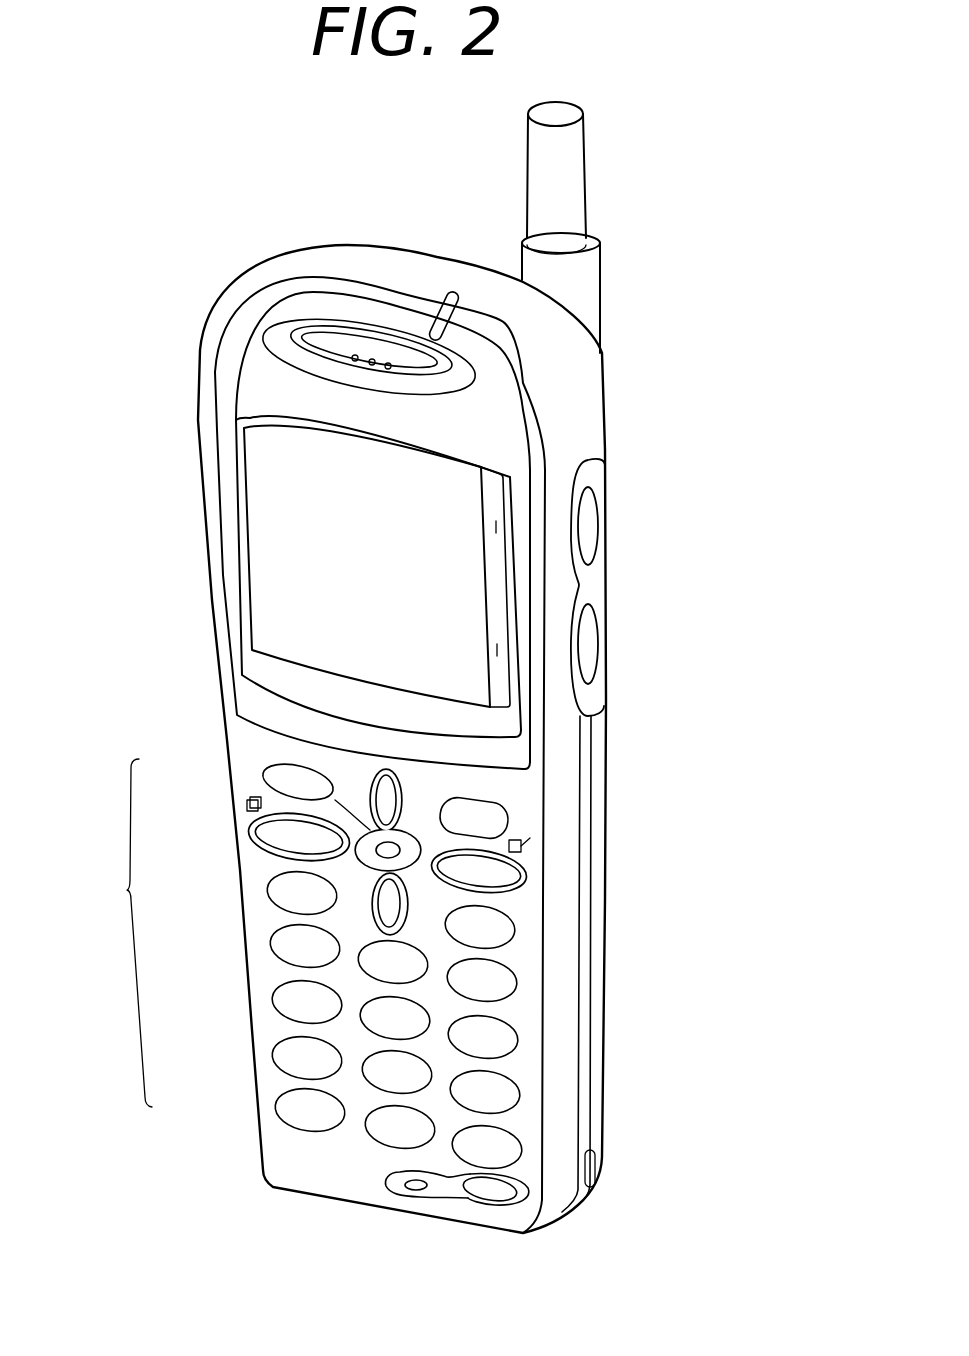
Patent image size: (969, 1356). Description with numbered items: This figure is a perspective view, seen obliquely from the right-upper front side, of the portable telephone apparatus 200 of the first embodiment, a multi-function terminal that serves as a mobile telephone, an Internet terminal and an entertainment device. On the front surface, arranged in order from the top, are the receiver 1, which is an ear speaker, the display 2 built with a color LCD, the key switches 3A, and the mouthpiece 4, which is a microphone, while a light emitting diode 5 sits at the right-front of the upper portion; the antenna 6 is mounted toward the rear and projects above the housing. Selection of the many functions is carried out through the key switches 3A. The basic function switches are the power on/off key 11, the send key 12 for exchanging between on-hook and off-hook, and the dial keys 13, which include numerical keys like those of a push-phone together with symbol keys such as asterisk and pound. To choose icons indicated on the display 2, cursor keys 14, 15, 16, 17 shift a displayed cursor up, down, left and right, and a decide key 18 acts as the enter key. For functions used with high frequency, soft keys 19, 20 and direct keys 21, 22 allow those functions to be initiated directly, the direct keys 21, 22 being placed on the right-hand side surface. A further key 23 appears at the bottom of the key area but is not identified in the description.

The portable telephone apparatus 200 is at (262, 263).
The receiver 1 is at (372, 360).
The display 2 is at (282, 530).
The key switches 3A is at (125, 888).
The mouthpiece 4 is at (409, 1190).
The light emitting diode 5 is at (439, 296).
The antenna 6 is at (585, 165).
The power on/off key 11 is at (512, 923).
The send key 12 is at (266, 875).
The dial keys 13 is at (515, 1083).
The cursor shifting key 14 is at (400, 795).
The cursor shifting key 15 is at (376, 889).
The cursor shifting key 16 is at (252, 819).
The cursor shifting key 17 is at (524, 873).
The decide key 18 is at (263, 787).
The soft key L 19 is at (267, 762).
The soft key R 20 is at (508, 818).
The direct key A 21 is at (600, 528).
The direct key B 22 is at (600, 641).
The clear key 23 is at (470, 1198).